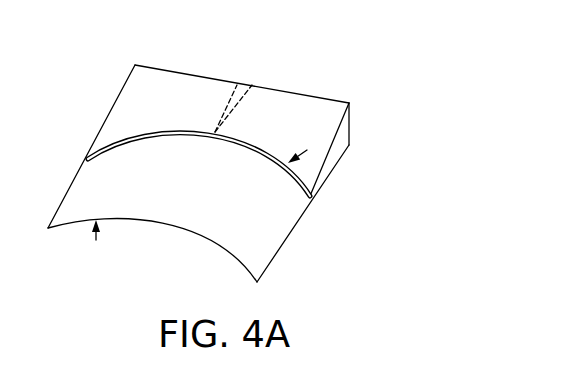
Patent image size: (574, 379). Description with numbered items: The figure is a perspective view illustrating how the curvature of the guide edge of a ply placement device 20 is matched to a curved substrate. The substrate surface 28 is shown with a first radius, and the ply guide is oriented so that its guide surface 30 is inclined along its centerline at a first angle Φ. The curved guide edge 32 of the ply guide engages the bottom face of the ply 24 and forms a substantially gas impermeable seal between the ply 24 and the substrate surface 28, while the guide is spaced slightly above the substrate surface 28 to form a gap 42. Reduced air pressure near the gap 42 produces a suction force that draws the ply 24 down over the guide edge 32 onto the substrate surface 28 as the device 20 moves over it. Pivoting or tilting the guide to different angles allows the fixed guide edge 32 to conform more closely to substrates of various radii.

The ply placement device 20 is at (223, 148).
The ply 24 is at (273, 225).
The substrate surface 28 is at (97, 173).
The guide surface 30 is at (135, 87).
The guide edge 32 is at (173, 145).
The gap 42 is at (276, 173).